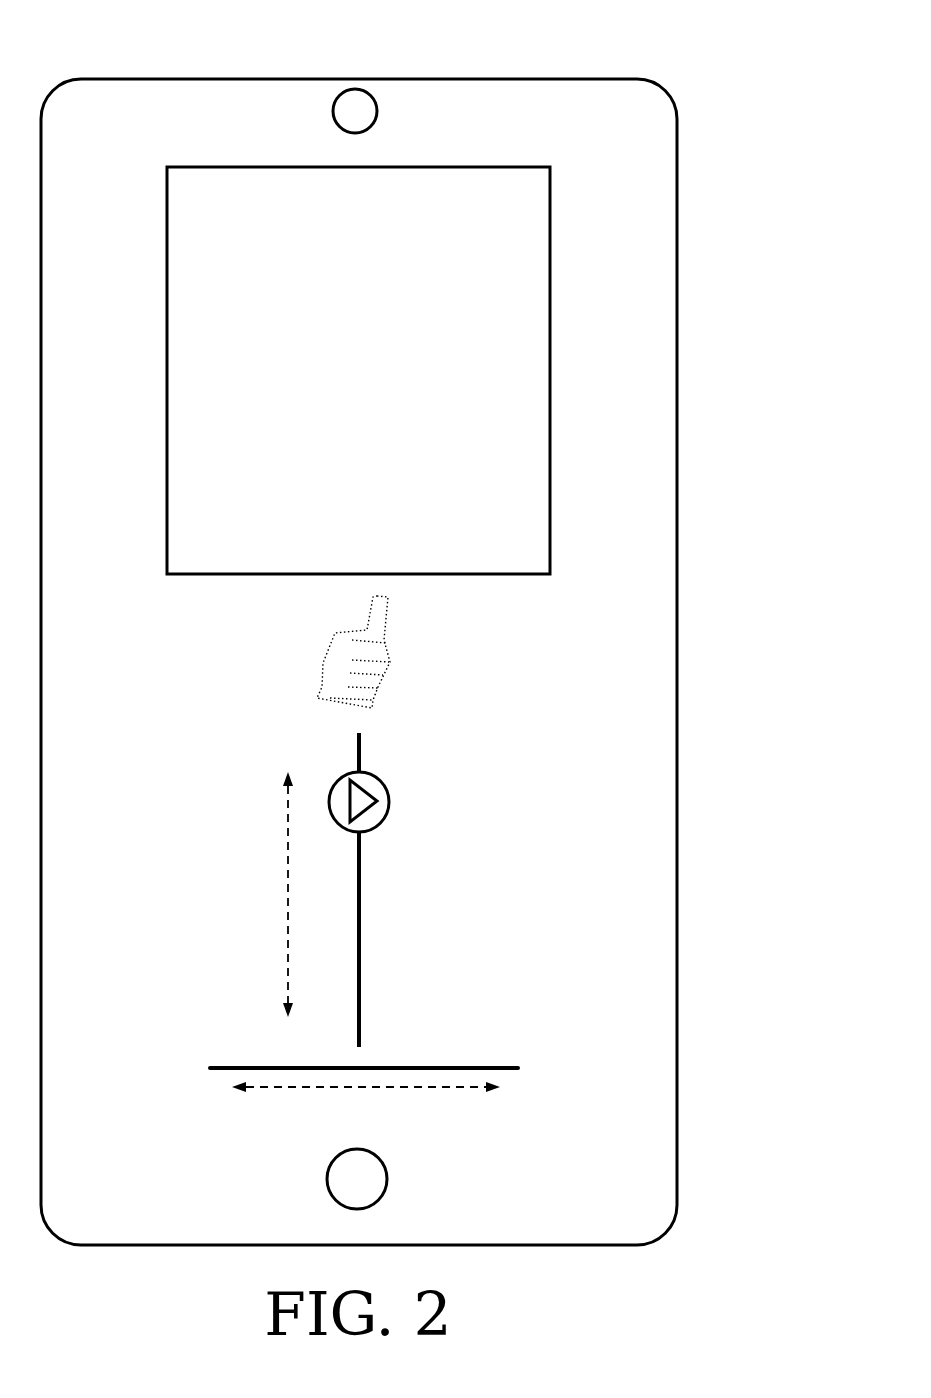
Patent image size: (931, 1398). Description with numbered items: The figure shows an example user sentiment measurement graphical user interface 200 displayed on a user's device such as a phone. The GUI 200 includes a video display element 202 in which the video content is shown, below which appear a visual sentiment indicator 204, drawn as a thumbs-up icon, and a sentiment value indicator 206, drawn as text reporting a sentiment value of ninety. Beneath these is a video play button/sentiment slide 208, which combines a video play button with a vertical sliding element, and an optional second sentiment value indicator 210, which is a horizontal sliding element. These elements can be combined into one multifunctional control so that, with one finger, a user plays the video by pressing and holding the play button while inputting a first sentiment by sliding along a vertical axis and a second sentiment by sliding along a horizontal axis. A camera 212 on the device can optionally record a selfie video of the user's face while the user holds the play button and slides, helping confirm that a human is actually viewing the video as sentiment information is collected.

The user sentiment measurement graphical user interface 200 is at (54, 24).
The video display element 202 is at (552, 308).
The visual sentiment indicator 204 is at (418, 656).
The sentiment value indicator 206 is at (180, 700).
The video play button/sentiment slide 208 is at (422, 788).
The second sentiment value indicator 210 is at (490, 1035).
The camera 212 is at (302, 115).